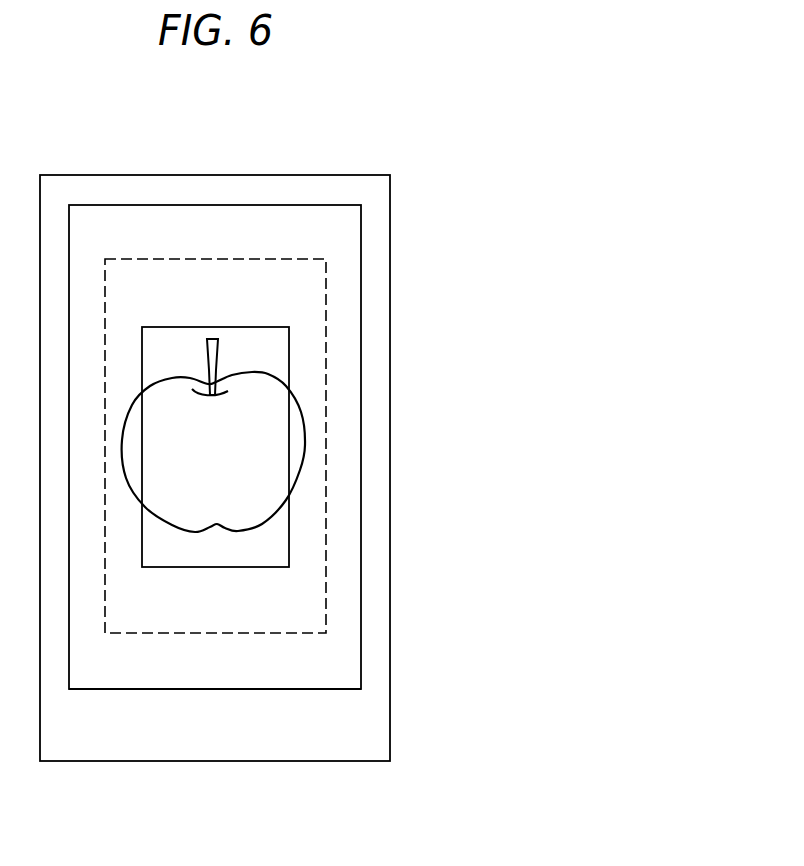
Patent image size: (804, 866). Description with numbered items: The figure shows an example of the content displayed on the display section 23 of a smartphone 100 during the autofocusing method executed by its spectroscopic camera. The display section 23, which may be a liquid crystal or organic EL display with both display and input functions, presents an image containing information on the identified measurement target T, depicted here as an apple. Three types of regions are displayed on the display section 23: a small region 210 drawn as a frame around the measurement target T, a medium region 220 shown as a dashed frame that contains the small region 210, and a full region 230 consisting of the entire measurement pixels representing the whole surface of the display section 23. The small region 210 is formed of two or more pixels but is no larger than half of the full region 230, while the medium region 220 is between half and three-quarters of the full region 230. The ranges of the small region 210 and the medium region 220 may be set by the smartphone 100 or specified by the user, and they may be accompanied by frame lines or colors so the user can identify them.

The smartphone 100 is at (433, 140).
The full region 230 is at (362, 229).
The medium region 220 is at (326, 320).
The small region 210 is at (289, 543).
The display section 23 is at (340, 667).
The measurement target T is at (272, 372).